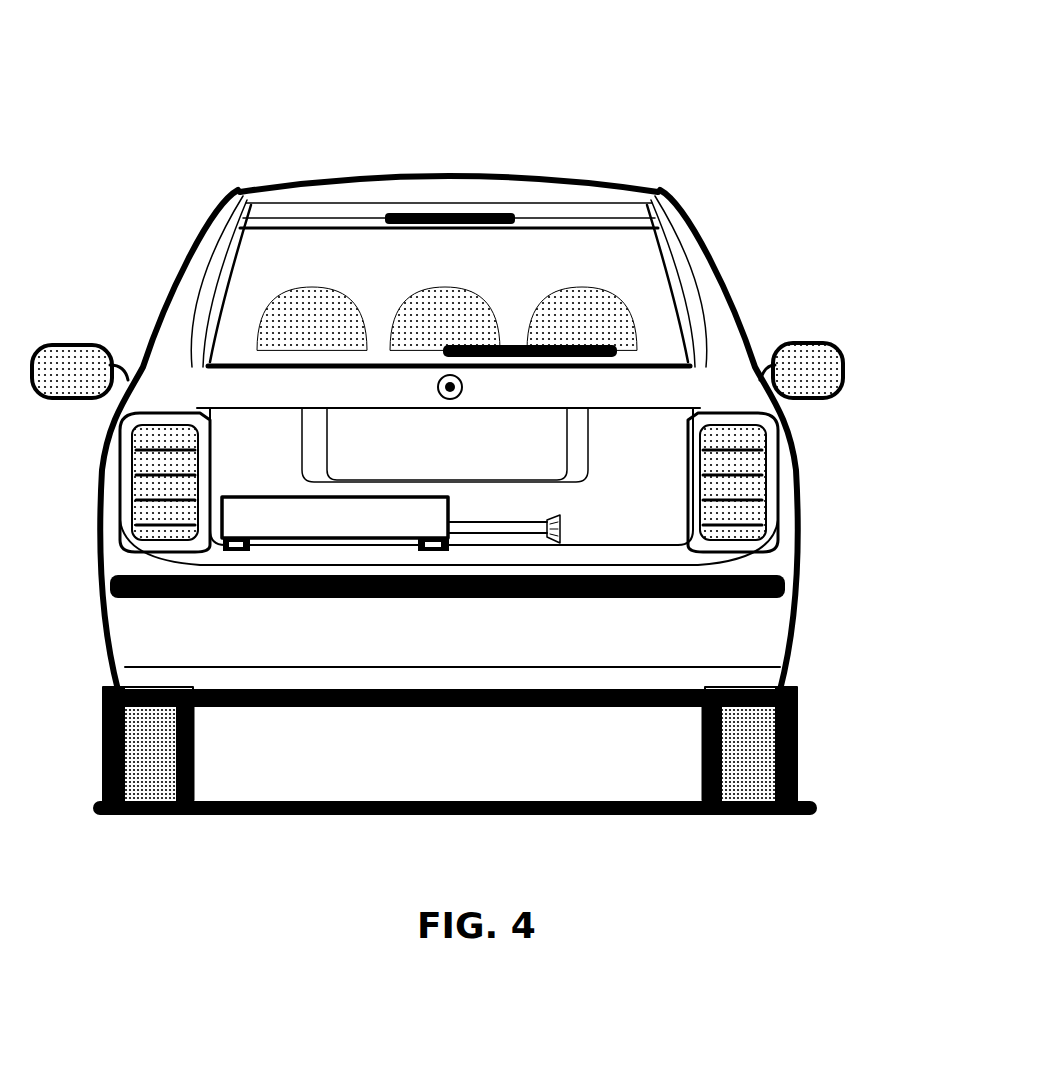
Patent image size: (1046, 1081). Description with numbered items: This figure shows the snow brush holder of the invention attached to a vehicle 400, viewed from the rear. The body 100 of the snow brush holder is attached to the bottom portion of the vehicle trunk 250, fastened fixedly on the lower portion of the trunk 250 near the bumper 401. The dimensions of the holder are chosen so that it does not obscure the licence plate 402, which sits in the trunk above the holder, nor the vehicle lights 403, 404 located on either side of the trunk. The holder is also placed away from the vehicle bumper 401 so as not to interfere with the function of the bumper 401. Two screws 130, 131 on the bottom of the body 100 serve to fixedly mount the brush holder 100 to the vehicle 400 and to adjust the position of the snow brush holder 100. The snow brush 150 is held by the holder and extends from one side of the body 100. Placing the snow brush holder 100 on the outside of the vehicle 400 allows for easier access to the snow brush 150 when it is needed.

The vehicle 400 is at (452, 414).
The vehicle trunk 250 is at (218, 445).
The licence plate 402 is at (475, 417).
The vehicle light 403 is at (135, 498).
The vehicle light 404 is at (750, 527).
The vehicle bumper 401 is at (132, 638).
The body 100 is at (302, 512).
The snow brush 150 is at (520, 522).
The screw 130 is at (436, 547).
The screw 131 is at (235, 543).